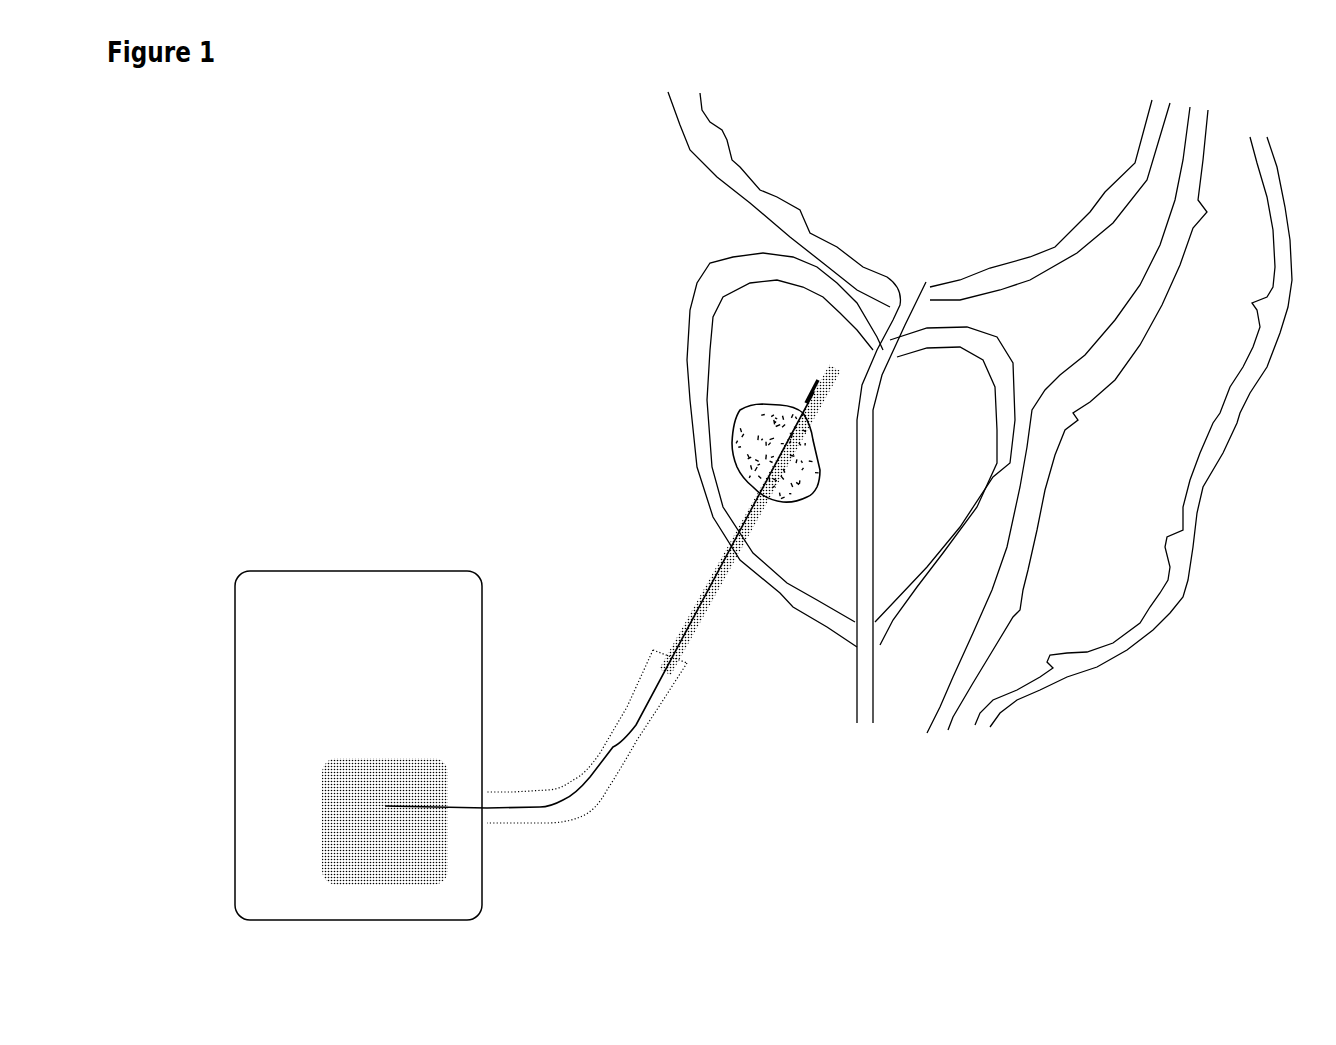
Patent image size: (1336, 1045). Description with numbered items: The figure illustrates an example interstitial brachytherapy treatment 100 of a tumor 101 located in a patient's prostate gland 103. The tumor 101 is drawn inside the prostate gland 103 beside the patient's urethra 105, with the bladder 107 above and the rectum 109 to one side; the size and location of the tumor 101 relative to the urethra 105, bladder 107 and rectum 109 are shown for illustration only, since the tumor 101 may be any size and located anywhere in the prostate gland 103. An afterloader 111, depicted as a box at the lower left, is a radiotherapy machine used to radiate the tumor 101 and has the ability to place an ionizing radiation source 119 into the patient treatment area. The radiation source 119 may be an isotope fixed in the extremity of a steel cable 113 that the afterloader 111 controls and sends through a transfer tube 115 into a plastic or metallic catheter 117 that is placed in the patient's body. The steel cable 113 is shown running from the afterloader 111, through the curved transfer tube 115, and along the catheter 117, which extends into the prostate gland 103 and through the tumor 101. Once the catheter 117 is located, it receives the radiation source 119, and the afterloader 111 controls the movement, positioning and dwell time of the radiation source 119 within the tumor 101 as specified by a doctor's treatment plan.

The interstitial brachytherapy treatment 100 is at (233, 345).
The tumor 101 is at (757, 453).
The prostate gland 103 is at (773, 322).
The urethra 105 is at (910, 293).
The bladder 107 is at (919, 392).
The rectum 109 is at (1109, 420).
The afterloader 111 is at (358, 745).
The steel cable 113 is at (643, 707).
The transfer tube 115 is at (593, 807).
The catheter 117 is at (693, 573).
The radiation source 119 is at (812, 382).